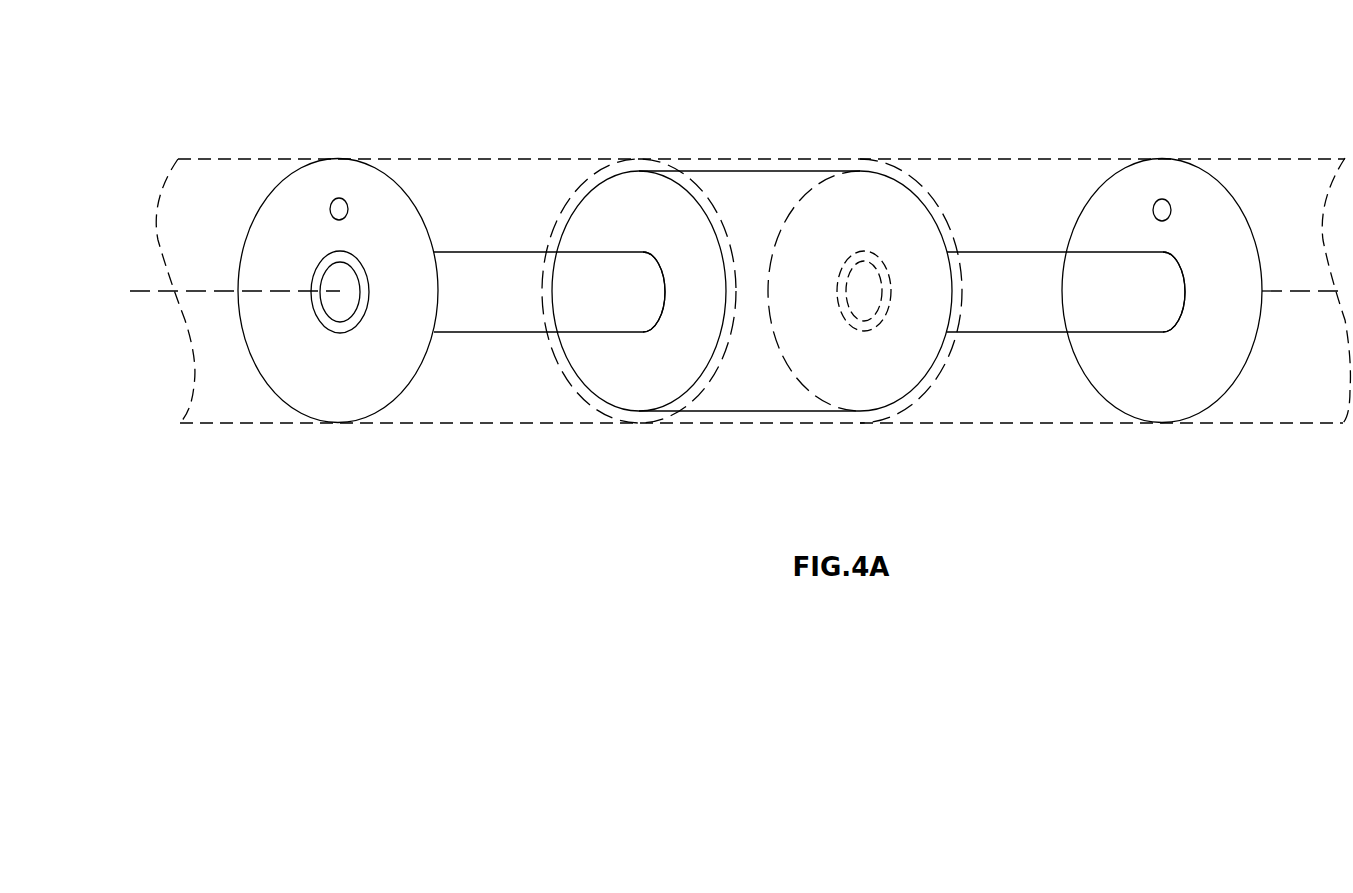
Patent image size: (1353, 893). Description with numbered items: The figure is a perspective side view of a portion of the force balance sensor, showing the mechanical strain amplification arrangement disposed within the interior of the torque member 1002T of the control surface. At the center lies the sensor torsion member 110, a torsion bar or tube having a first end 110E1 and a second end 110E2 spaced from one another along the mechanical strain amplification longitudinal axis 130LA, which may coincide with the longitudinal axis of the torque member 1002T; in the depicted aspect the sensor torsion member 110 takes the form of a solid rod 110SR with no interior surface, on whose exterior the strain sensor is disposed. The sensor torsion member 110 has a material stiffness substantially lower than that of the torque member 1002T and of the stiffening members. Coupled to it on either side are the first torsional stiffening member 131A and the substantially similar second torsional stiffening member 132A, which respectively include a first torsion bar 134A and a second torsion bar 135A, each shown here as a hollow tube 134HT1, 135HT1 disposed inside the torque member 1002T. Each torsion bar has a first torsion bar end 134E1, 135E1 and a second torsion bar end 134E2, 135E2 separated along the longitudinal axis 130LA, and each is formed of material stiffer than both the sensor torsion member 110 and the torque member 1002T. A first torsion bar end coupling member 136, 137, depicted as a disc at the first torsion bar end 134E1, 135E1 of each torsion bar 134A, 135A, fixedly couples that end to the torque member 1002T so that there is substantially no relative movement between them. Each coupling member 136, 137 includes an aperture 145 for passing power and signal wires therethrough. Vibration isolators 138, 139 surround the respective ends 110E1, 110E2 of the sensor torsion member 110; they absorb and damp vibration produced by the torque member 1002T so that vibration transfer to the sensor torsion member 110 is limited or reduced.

The sensor torsion member 110 is at (757, 172).
The first end of sensor torsion member 110E1 is at (670, 178).
The second end of sensor torsion member 110E2 is at (927, 193).
The solid rod 110SR is at (750, 412).
The mechanical strain amplification longitudinal axis 130LA is at (153, 292).
The first torsional stiffening member 131A is at (466, 130).
The second torsional stiffening member 132A is at (1029, 110).
The first torsion bar 134A is at (500, 252).
The first torsion bar end of first torsion bar 134E1 is at (338, 333).
The second torsion bar end of first torsion bar 134E2 is at (660, 320).
The hollow tube 134HT1 is at (502, 332).
The second torsion bar 135A is at (1022, 252).
The first torsion bar end of second torsion bar 135E1 is at (1180, 318).
The second torsion bar end of second torsion bar 135E2 is at (858, 332).
The hollow tube 135HT1 is at (1028, 332).
The first torsion bar end coupling member 136 is at (285, 180).
The first torsion bar end coupling member 137 is at (1112, 175).
The vibration isolator 138 is at (587, 175).
The vibration isolator 139 is at (917, 160).
The aperture 145 is at (347, 200).
The torque member 1002T is at (222, 423).